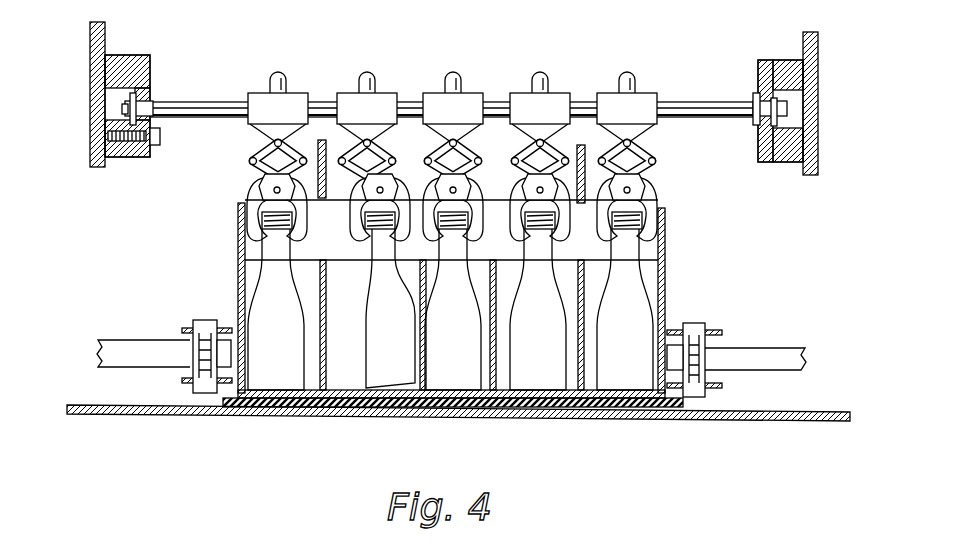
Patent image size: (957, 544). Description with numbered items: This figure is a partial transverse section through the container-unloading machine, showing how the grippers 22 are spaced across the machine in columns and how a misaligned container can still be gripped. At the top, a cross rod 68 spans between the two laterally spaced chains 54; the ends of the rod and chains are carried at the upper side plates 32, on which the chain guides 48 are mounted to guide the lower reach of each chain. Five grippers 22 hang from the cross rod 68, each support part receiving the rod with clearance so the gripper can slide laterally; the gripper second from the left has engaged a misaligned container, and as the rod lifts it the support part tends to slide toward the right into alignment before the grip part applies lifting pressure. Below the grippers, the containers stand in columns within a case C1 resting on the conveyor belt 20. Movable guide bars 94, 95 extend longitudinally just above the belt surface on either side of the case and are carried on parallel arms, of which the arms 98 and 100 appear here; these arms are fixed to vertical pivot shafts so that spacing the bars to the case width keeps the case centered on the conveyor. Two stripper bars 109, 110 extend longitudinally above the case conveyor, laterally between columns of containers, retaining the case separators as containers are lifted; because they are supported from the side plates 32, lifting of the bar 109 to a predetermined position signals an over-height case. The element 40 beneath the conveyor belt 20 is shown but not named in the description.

The conveyor belt 20 is at (636, 415).
The grippers 22 is at (336, 87).
The upper side plates 32 is at (90, 54).
The conveyor 40 is at (741, 421).
The chain guide 48 is at (128, 58).
The chain 54 is at (152, 97).
The cross rod 68 is at (198, 100).
The guide bar 94 is at (679, 330).
The guide bar 95 is at (226, 326).
The parallel arm 98 is at (745, 348).
The parallel arm 100 is at (147, 340).
The stripper bar 109 is at (582, 145).
The stripper bar 110 is at (326, 198).
The bottle carrier C1 is at (668, 218).